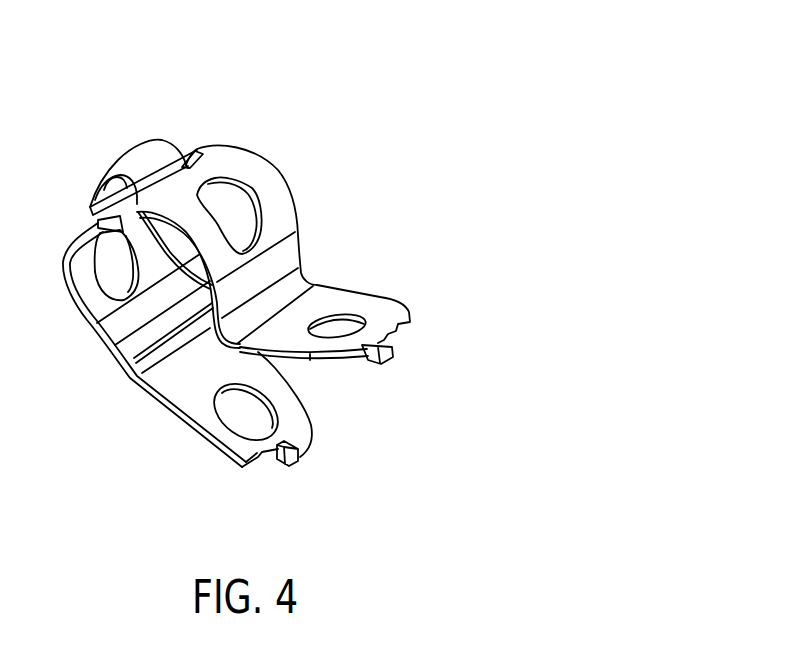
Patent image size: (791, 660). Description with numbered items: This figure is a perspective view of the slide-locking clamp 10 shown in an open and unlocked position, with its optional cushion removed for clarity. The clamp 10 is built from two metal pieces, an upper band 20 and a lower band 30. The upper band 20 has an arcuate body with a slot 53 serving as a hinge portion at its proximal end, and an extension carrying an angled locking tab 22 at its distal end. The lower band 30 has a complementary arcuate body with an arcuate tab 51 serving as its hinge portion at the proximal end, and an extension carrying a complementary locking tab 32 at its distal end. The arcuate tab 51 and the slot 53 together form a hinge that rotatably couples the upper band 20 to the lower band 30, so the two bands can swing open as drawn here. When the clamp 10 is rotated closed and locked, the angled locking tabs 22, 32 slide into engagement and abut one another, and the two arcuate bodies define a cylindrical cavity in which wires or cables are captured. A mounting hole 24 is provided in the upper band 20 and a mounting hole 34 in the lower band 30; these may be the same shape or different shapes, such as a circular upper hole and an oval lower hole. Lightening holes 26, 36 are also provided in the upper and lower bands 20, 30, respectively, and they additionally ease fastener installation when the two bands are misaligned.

The clamp 10 is at (437, 98).
The upper band 20 is at (321, 239).
The locking tab 22 is at (387, 360).
The mounting hole 24 is at (352, 315).
The lightening hole 26 is at (240, 204).
The lower band 30 is at (108, 381).
The complementary locking tab 32 is at (290, 461).
The mounting hole 34 is at (243, 420).
The lightening hole 36 is at (106, 275).
The arcuate tab 51 is at (137, 160).
The slot 53 is at (185, 163).